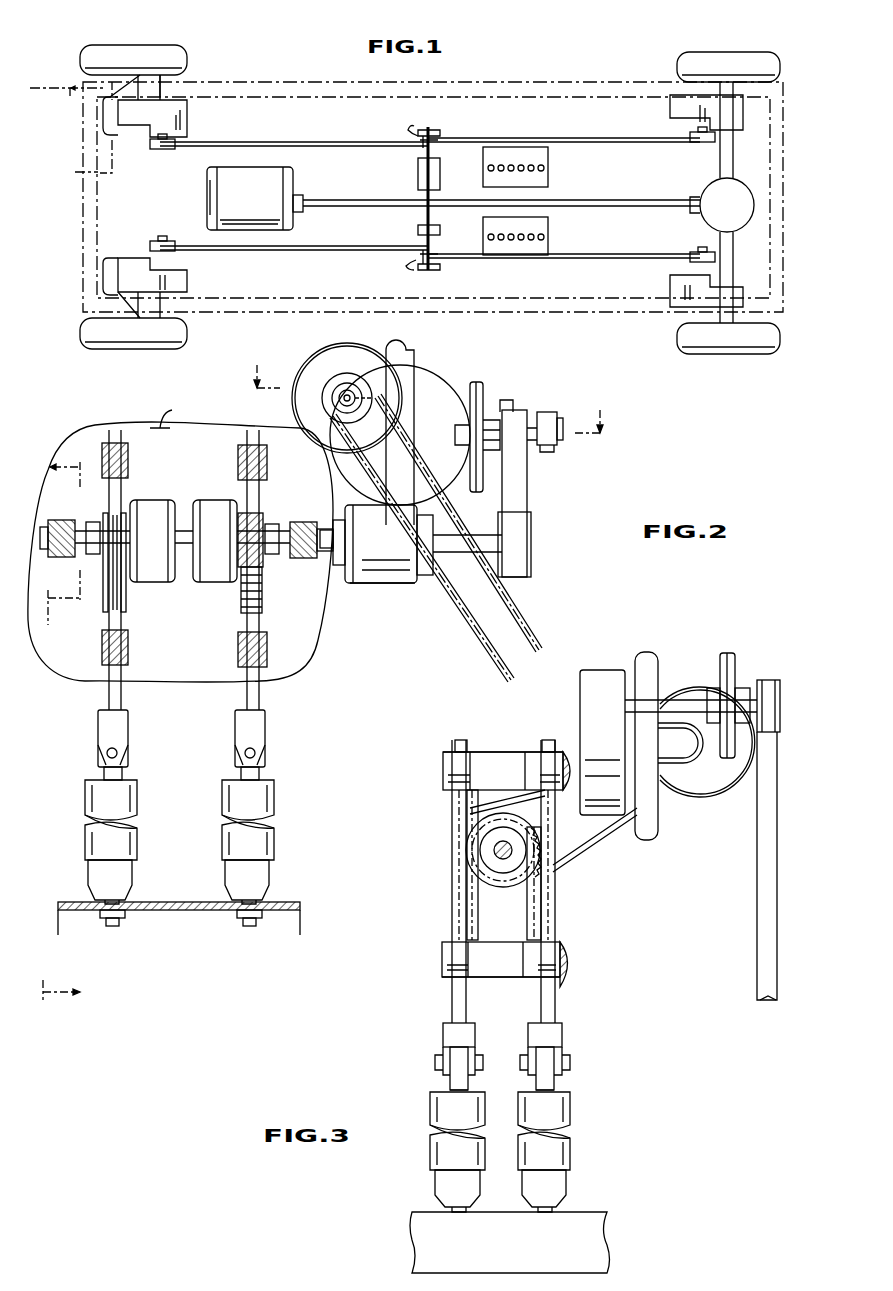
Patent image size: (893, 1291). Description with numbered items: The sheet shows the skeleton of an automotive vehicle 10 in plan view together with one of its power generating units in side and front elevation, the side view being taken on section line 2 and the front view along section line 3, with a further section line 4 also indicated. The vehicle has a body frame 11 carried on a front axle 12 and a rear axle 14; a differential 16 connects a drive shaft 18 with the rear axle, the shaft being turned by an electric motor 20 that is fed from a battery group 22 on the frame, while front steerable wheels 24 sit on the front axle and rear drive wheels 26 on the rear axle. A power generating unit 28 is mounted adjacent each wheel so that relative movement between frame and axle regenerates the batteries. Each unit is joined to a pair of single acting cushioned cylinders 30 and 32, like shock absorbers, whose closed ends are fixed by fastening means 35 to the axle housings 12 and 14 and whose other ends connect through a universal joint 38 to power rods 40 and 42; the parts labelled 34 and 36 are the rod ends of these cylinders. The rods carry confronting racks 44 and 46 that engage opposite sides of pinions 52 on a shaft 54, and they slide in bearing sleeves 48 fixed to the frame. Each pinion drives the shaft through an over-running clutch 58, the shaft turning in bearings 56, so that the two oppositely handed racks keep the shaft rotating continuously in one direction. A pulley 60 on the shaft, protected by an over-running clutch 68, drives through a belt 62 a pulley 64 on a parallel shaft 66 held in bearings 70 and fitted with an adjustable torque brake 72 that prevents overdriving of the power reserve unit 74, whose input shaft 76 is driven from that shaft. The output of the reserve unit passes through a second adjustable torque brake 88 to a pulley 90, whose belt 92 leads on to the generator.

In FIG. 1, the section line 2- 2 is at (71, 123).
In FIG. 2, the section line 3- 3 is at (69, 723).
In FIG. 2, the section line 4- 4 is at (430, 391).
In FIG. 1, the automotive vehicle 10 is at (278, 82).
In FIG. 1, the body frame 11 is at (505, 86).
In FIG. 2, the body frame 11 is at (170, 410).
In FIG. 3, the body frame 11 is at (568, 770).
In FIG. 1, the front axle 12 is at (163, 86).
In FIG. 2, the front axle 12 is at (196, 910).
In FIG. 3, the front axle 12 is at (432, 1238).
In FIG. 1, the rear axle 14 is at (735, 155).
In FIG. 1, the differential 16 is at (712, 212).
In FIG. 1, the drive shaft 18 is at (608, 208).
In FIG. 1, the electric motor 20 is at (254, 200).
In FIG. 1, the battery group 22 is at (548, 220).
In FIG. 1, the front steerable wheels 24 is at (140, 44).
In FIG. 1, the rear drive wheels 26 is at (781, 66).
In FIG. 1, the power generating unit 28 is at (187, 113).
In FIG. 2, the power generating unit 28 is at (198, 452).
In FIG. 3, the power generating unit 28 is at (440, 910).
In FIG. 2, the cushioned cylinder 30 is at (85, 840).
In FIG. 3, the cushioned cylinder 30 is at (570, 1150).
In FIG. 2, the cushioned cylinder 32 is at (274, 828).
In FIG. 3, the cushioned cylinder 32 is at (435, 1156).
In FIG. 2, the rod 34 is at (104, 770).
In FIG. 3, the rod 34 is at (554, 1082).
In FIG. 2, the fastening means 35 is at (105, 925).
In FIG. 2, the rod 36 is at (259, 772).
In FIG. 3, the rod 36 is at (450, 1082).
In FIG. 2, the universal joint 38 is at (128, 748).
In FIG. 3, the universal joint 38 is at (516, 1036).
In FIG. 2, the power rod 40 is at (109, 698).
In FIG. 3, the power rod 40 is at (555, 996).
In FIG. 2, the power rod 42 is at (259, 698).
In FIG. 3, the power rod 42 is at (452, 990).
In FIG. 2, the rack 44 is at (130, 596).
In FIG. 3, the rack 44 is at (541, 882).
In FIG. 2, the rack 46 is at (262, 600).
In FIG. 3, the rack 46 is at (467, 896).
In FIG. 2, the bearing sleeve 48 is at (102, 455).
In FIG. 3, the bearing sleeve 48 is at (522, 754).
In FIG. 2, the pinion 52 is at (105, 515).
In FIG. 3, the pinion 52 is at (470, 830).
In FIG. 2, the shaft 54 is at (330, 585).
In FIG. 3, the shaft 54 is at (494, 852).
In FIG. 2, the bearing 56 is at (58, 520).
In FIG. 2, the over-running clutch 58 is at (197, 502).
In FIG. 1, the pulley or sprocket 60 is at (163, 149).
In FIG. 2, the pulley or sprocket 60 is at (531, 518).
In FIG. 1, the belt or chain 62 is at (367, 142).
In FIG. 2, the belt or chain 62 is at (527, 490).
In FIG. 3, the belt or chain 62 is at (594, 835).
In FIG. 1, the pulley or sprocket 64 is at (418, 128).
In FIG. 2, the pulley or sprocket 64 is at (506, 400).
In FIG. 2, the parallel shaft 66 is at (548, 412).
In FIG. 2, the over-running clutch 68 is at (385, 585).
In FIG. 2, the bearing 70 is at (562, 418).
In FIG. 2, the adjustable torque brake 72 is at (474, 382).
In FIG. 3, the adjustable torque brake 72 is at (710, 780).
In FIG. 1, the power reserve unit 74 is at (418, 172).
In FIG. 2, the power reserve unit 74 is at (432, 384).
In FIG. 3, the power reserve unit 74 is at (609, 670).
In FIG. 1, the input shaft 76 is at (418, 228).
In FIG. 2, the adjustable torque brake 88 is at (319, 358).
In FIG. 3, the adjustable torque brake 88 is at (722, 654).
In FIG. 2, the pulley or sprocket 90 is at (339, 382).
In FIG. 3, the pulley or sprocket 90 is at (784, 680).
In FIG. 2, the belt or chain 92 is at (478, 648).
In FIG. 3, the belt or chain 92 is at (777, 858).